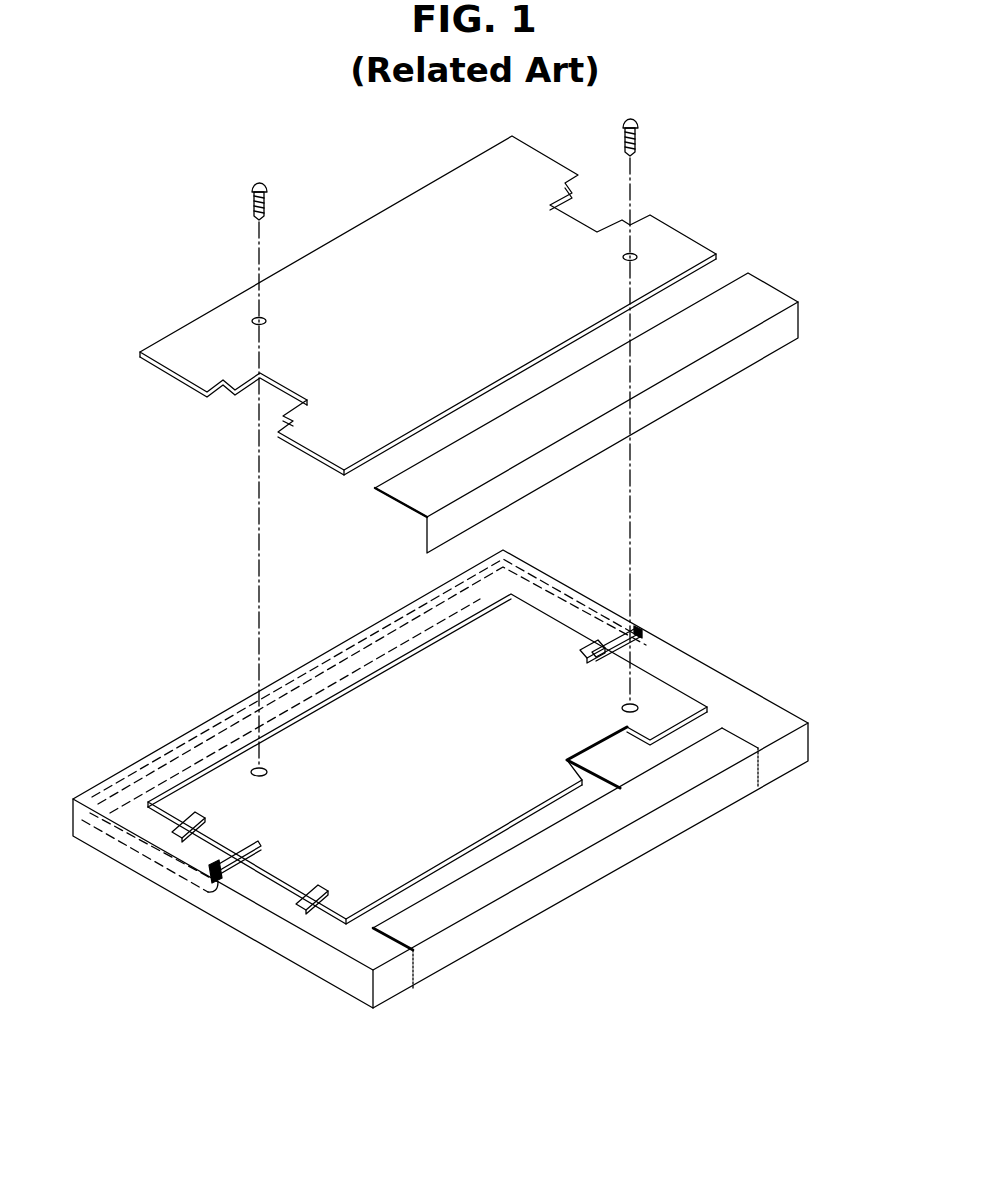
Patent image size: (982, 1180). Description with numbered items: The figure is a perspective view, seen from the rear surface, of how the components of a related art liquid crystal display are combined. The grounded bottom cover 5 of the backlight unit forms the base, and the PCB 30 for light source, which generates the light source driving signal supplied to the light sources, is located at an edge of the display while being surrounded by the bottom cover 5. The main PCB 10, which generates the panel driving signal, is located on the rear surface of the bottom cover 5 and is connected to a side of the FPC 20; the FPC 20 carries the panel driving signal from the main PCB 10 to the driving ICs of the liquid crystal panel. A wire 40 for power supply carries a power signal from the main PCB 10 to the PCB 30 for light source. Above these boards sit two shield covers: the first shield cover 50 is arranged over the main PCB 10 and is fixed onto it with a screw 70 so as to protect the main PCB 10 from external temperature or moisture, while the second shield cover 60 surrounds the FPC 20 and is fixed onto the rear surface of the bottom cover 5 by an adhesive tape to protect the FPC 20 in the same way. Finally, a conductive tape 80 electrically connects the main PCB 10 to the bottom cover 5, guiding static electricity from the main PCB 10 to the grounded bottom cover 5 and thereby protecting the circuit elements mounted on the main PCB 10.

The bottom cover 5 is at (758, 704).
The main printed circuit board 10 is at (674, 694).
The flexible printed circuit 20 is at (634, 855).
The PCB for light source 30 is at (178, 760).
The wire for power supply 40 is at (640, 648).
The first shield cover 50 is at (668, 234).
The second shield cover 60 is at (763, 294).
The screw 70 is at (263, 182).
The conductive tape 80 is at (292, 904).